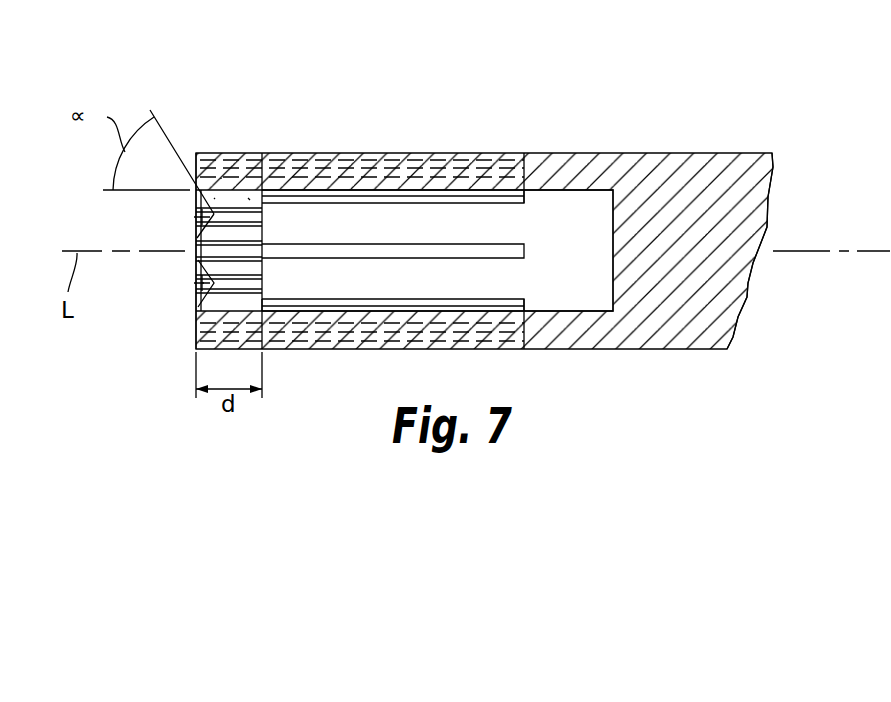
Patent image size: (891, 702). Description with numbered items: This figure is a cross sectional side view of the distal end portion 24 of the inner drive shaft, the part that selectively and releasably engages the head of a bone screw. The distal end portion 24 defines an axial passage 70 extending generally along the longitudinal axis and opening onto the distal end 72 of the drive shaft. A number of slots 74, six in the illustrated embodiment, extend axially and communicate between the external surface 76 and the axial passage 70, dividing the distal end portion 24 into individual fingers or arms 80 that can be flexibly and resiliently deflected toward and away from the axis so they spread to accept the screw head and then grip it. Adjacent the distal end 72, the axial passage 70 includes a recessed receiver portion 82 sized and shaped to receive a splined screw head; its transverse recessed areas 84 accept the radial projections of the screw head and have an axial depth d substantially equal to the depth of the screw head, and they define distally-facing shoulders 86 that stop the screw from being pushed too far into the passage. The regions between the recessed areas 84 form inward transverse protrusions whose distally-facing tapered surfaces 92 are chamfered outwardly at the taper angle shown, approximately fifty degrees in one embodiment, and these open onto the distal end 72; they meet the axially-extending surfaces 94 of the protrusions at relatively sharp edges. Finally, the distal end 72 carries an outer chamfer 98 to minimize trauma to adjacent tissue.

The distal end portion 24 is at (634, 122).
The axial passage 70 is at (578, 258).
The distal end 72 is at (195, 344).
The slots 74 is at (418, 252).
The external surface 76 is at (345, 152).
The arms 80 is at (322, 362).
The receiver portion 82 is at (218, 192).
The recessed areas 84 is at (200, 217).
The distally-facing shoulders 86 is at (256, 292).
The tapered surfaces 92 is at (189, 172).
The axially-extending surfaces 94 is at (255, 204).
The outer chamfer 98 is at (221, 170).